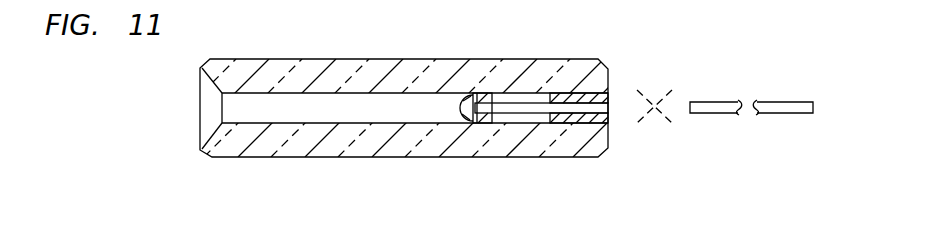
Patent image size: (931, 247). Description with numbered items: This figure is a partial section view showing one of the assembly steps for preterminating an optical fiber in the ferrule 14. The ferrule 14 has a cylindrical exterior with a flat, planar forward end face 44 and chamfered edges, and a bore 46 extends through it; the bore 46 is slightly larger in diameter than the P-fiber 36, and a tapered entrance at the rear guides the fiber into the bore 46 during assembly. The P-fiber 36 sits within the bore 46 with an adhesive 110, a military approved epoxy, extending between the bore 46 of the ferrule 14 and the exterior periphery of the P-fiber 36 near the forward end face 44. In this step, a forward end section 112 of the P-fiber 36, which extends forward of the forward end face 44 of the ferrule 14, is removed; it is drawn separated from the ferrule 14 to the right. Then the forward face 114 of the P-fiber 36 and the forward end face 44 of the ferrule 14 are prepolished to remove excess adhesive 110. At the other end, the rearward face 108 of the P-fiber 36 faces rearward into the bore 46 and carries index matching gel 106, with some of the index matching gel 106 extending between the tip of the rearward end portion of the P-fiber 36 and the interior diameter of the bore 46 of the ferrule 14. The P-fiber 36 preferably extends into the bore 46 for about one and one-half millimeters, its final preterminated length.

The ferrule 14 is at (532, 51).
The P-fiber 36 is at (518, 107).
The forward end face 44 is at (612, 75).
The bore 46 is at (350, 124).
The index matching gel 106 is at (470, 120).
The rearward face 108 is at (455, 98).
The adhesive 110 is at (588, 124).
The forward end section 112 is at (726, 104).
The forward face 114 is at (612, 103).